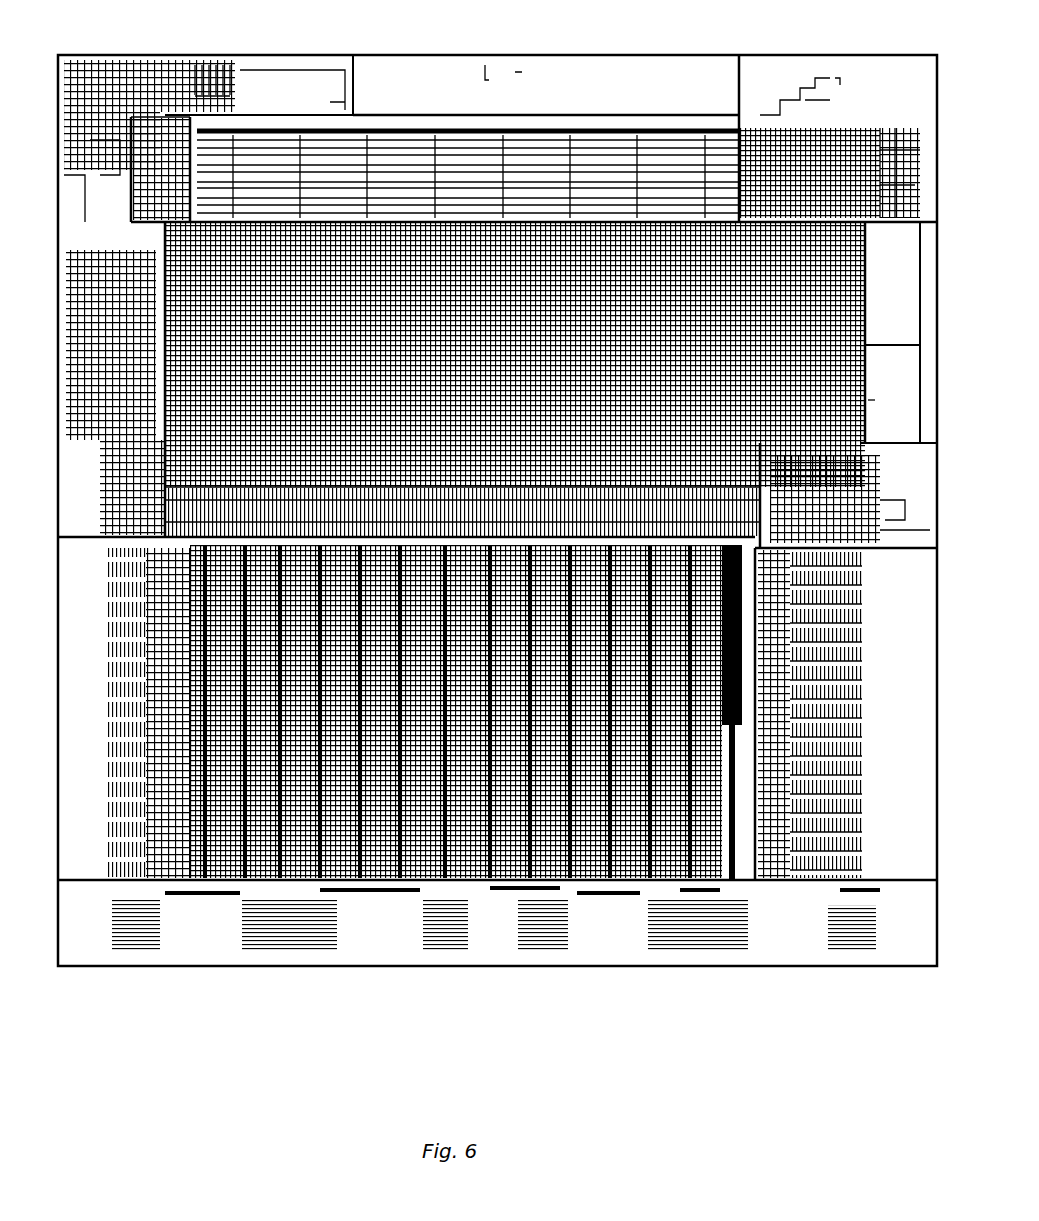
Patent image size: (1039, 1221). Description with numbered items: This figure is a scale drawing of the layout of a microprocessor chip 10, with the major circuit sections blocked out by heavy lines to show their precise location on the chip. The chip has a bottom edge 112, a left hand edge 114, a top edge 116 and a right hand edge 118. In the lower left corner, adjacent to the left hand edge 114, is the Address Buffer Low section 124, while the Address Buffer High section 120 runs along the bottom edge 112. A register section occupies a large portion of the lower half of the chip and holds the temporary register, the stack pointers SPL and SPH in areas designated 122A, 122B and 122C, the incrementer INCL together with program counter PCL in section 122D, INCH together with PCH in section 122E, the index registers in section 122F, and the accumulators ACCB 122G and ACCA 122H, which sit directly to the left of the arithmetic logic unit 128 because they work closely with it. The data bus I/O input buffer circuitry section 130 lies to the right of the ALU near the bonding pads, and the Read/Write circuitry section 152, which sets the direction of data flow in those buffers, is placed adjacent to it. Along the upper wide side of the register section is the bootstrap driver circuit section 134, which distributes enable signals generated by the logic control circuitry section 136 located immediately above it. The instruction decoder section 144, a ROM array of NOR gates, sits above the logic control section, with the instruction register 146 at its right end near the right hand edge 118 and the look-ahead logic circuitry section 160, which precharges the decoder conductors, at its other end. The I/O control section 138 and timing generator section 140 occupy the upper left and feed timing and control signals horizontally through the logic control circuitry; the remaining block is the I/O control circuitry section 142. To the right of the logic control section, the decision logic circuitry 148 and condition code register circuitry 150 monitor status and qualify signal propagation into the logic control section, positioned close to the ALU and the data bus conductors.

The microprocessor chip 10 is at (123, 1003).
The bottom edge 112 is at (603, 965).
The left hand edge 114 is at (72, 600).
The top edge 116 is at (457, 58).
The right hand edge 118 is at (946, 599).
The Address Buffer High section 120 is at (225, 950).
The temporary register section 122A is at (217, 880).
The stack pointer low register section 122B is at (243, 880).
The stack pointer high register section 122C is at (305, 868).
The INCL and PCL section 122D is at (381, 868).
The INCH and PCH section 122E is at (440, 868).
The index register section 122F is at (510, 868).
The accumulator ACCB 122G is at (540, 868).
The accumulator ACCA 122H is at (583, 868).
The Address Buffer Low section 124 is at (64, 880).
The arithmetic logic unit 128 is at (647, 868).
The data bus I/O input buffer circuitry section 130 is at (890, 865).
The bootstrap driver circuit section 134 is at (758, 502).
The logic control circuitry section 136 is at (618, 228).
The I/O control section 138 is at (62, 529).
The timing generator section 140 is at (214, 224).
The I/O control circuitry section 142 is at (308, 70).
The instruction decoder section 144 is at (532, 126).
The instruction register 146 is at (824, 66).
The decision logic circuitry 148 is at (913, 322).
The condition code register circuitry 150 is at (910, 400).
The Read/Write circuitry section 152 is at (918, 497).
The look-ahead logic circuitry section 160 is at (185, 135).